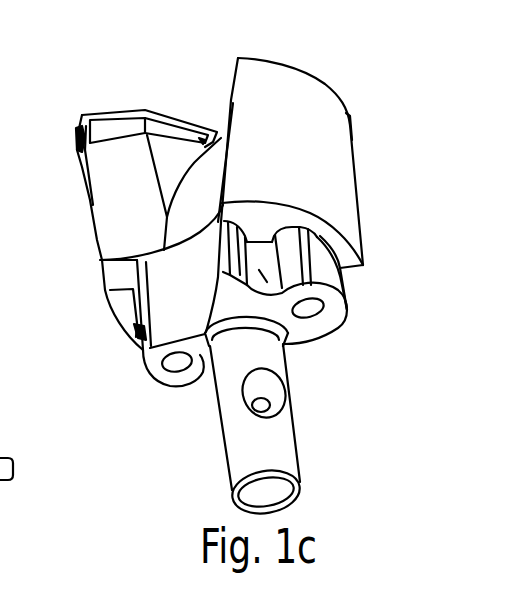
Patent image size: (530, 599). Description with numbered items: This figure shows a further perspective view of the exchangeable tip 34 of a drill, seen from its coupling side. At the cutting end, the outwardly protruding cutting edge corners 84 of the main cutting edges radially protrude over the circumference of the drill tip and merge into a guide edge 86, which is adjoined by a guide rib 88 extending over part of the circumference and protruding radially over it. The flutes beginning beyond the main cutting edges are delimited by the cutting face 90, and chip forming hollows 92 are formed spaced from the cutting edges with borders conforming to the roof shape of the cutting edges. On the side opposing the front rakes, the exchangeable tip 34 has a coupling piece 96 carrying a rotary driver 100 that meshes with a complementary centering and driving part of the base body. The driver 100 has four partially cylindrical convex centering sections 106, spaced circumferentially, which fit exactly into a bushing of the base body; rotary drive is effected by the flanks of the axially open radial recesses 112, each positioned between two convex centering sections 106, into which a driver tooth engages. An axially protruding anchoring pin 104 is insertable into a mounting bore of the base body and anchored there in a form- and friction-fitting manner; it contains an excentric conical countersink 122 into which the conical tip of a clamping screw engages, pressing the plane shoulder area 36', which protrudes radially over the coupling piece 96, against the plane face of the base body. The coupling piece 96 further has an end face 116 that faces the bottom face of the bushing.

The exchangeable tip 34 is at (128, 206).
The shoulder area 36' is at (318, 209).
The cutting edge corner 84 is at (81, 115).
The guide edge 86 is at (84, 117).
The guide rib 88 is at (78, 132).
The cutting face 90 is at (118, 172).
The chip forming hollow 92 is at (131, 125).
The coupling piece 96 is at (134, 336).
The rotary driver 100 is at (324, 286).
The anchoring pin 104 is at (286, 448).
The convex centering section 106 is at (318, 243).
The radial recess 112 is at (298, 292).
The end face 116 is at (202, 357).
The conical countersink 122 is at (271, 396).